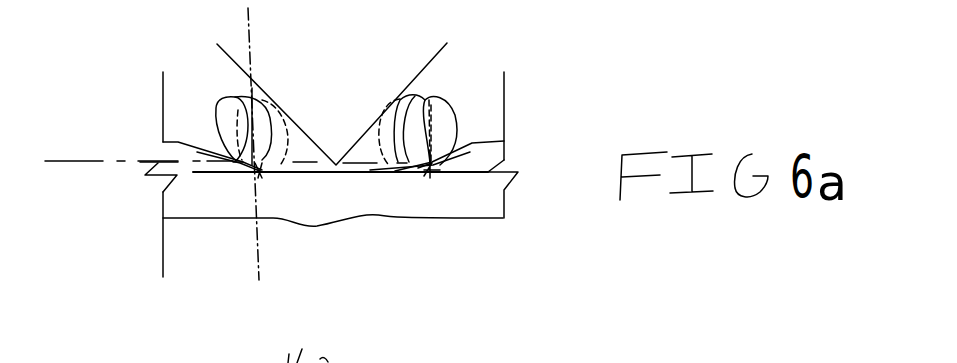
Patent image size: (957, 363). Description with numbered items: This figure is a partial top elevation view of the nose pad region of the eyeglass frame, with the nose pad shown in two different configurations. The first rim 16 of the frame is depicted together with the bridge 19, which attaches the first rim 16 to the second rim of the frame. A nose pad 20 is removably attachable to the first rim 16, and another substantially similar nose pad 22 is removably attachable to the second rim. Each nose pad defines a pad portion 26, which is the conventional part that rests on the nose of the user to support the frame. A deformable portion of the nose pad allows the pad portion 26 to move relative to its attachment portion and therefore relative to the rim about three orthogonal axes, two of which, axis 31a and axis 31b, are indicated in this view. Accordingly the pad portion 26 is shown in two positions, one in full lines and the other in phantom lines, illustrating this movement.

The first rim 16 is at (482, 221).
The bridge 19 is at (345, 221).
The nose pad 20 is at (262, 172).
The nose pad 22 is at (430, 178).
The pad portion 26 is at (483, 43).
The orthogonal axis 31a is at (250, 68).
The orthogonal axis 31b is at (92, 161).